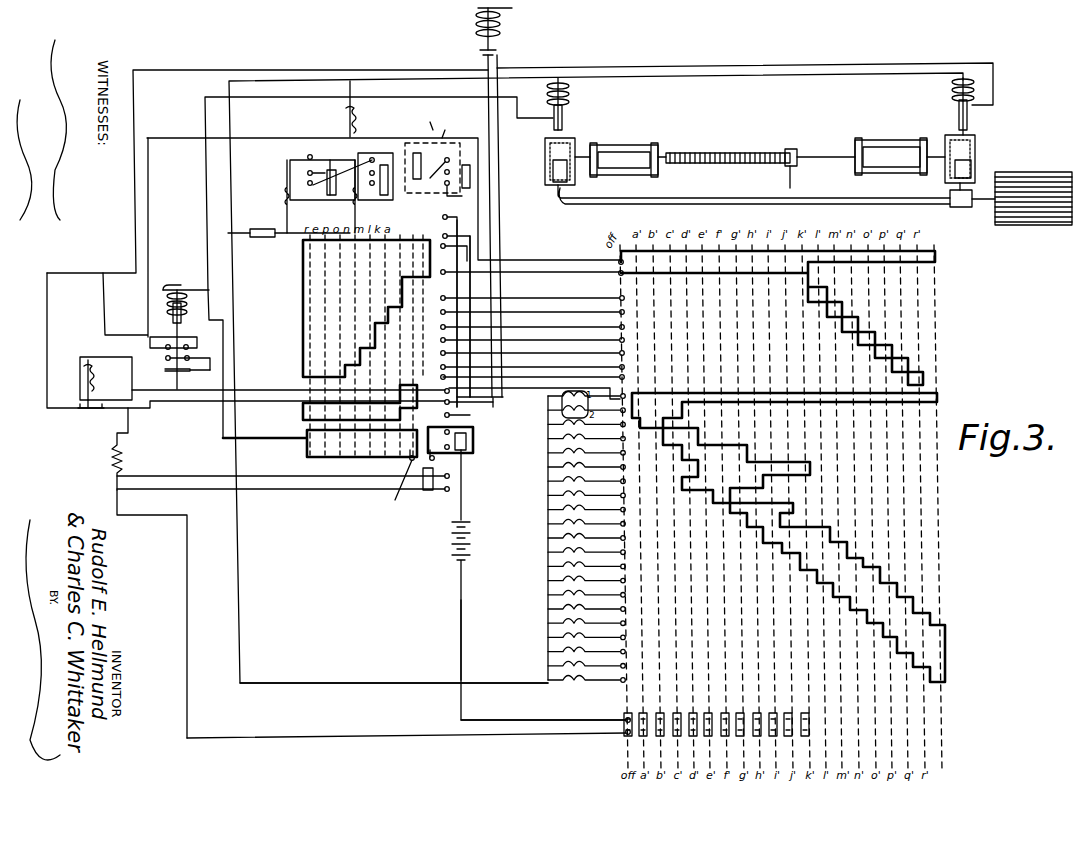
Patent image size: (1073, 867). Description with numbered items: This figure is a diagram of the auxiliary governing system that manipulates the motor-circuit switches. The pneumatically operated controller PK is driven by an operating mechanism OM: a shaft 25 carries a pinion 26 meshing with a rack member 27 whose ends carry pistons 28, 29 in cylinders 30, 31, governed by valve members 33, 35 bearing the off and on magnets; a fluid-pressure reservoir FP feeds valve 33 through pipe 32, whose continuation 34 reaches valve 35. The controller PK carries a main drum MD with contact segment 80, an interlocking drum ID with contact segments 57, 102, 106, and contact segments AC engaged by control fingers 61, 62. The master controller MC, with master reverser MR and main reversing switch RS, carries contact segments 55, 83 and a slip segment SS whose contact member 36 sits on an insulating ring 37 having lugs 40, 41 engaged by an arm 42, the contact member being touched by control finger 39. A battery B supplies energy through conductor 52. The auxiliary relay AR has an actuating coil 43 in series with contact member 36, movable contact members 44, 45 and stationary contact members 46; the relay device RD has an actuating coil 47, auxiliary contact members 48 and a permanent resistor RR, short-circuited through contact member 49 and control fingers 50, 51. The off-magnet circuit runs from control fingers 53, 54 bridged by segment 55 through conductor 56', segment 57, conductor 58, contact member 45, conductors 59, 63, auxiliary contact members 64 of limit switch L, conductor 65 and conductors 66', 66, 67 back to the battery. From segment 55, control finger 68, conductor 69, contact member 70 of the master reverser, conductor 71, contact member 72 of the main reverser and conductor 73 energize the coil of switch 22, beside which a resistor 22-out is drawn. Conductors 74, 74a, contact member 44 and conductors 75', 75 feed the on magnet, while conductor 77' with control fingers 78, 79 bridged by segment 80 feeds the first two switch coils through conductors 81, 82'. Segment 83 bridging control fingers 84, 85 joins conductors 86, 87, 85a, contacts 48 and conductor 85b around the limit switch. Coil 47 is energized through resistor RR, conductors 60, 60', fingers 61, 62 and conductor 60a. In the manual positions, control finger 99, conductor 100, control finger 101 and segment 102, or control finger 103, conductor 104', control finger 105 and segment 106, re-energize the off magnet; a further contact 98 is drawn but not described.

The switch 22 is at (359, 109).
The output resistor 22-out is at (257, 241).
The shaft 25 is at (795, 179).
The pinion 26 is at (790, 144).
The rack member 27 is at (740, 153).
The piston 28 is at (601, 145).
The piston 29 is at (877, 144).
The operating cylinder 30 is at (633, 145).
The operating cylinder 31 is at (909, 145).
The pipe or passage 32 is at (983, 208).
The valve member 33 is at (974, 155).
The continuation of pipe 34 is at (685, 197).
The valve member 35 is at (545, 158).
The contact member 36 is at (468, 434).
The band or ring of insulating material 37 is at (466, 453).
The control finger 39 is at (336, 443).
The projection or lug 40 is at (439, 464).
The projection or lug 41 is at (399, 461).
The projection or arm 42 is at (396, 483).
The actuating coil 43 is at (171, 314).
The movable contact member 44 is at (182, 371).
The movable contact member 45 is at (166, 348).
The stationary contact members 46 is at (165, 360).
The actuating coil 47 is at (80, 379).
The auxiliary contact members 48 is at (92, 410).
The contact member 49 is at (423, 490).
The control finger 50 is at (293, 476).
The control finger 51 is at (283, 495).
The conductor 52 is at (462, 491).
The control finger 53 is at (454, 251).
The control finger 54 is at (526, 279).
The contact segment 55 is at (303, 287).
The conductor 56' is at (575, 279).
The contact segment 57 is at (616, 260).
The conductor 58 is at (585, 260).
The conductor 59 is at (120, 335).
The conductor 60 is at (152, 614).
The conductor 60' is at (406, 746).
The conductor 60a is at (560, 719).
The control finger 61 is at (623, 735).
The control finger 62 is at (625, 719).
The conductor 63 is at (182, 72).
The auxiliary contact members 64 is at (478, 53).
The conductor 65 is at (718, 65).
The conductor 66 is at (394, 672).
The conductor 66' is at (596, 378).
The conductor 67 is at (461, 644).
The control finger 68 is at (456, 309).
The conductor 69 is at (454, 305).
The contact member 70 is at (436, 174).
The conductor 71 is at (413, 180).
The contact member 72 is at (335, 181).
The conductor 73 is at (340, 172).
The conductor 74 is at (472, 284).
The conductor 74a is at (282, 387).
The conductor 75 is at (196, 299).
The conductor 75' is at (379, 267).
The conductor 77' is at (558, 400).
The control finger 78 is at (616, 388).
The control finger 79 is at (621, 411).
The contact segment 80 is at (649, 409).
The conductor 81 is at (546, 508).
The conductor 82' is at (509, 691).
The contact segment 83 is at (300, 417).
The control finger 84 is at (459, 407).
The control finger 85 is at (376, 388).
The conductor 85a is at (279, 399).
The conductor 85b is at (47, 347).
The conductor 86 is at (480, 392).
The conductor 87 is at (495, 405).
The contact 98 is at (438, 426).
The control finger 99 is at (519, 293).
The conductor 100 is at (533, 289).
The control finger 101 is at (618, 297).
The contact segment 102 is at (808, 295).
The control finger 103 is at (516, 317).
The conductor 104' is at (545, 319).
The control finger 105 is at (618, 314).
The contact segment 106 is at (825, 313).
The auxiliary relay AR is at (176, 280).
The relay device RD is at (106, 378).
The permanent resistor RR is at (107, 449).
The main reversing switch RS is at (320, 189).
The master controller MC is at (382, 186).
The master reverser MR is at (432, 145).
The slip segment SS is at (464, 440).
The battery B is at (539, 621).
The limit switch L is at (494, 29).
The switching device or controller PK is at (742, 121).
The operating mechanism OM is at (728, 183).
The fluid-pressure tank or reservoir FP is at (1033, 187).
The interlocking drum ID is at (793, 318).
The main drum MD is at (807, 537).
The contact segments AC is at (716, 737).